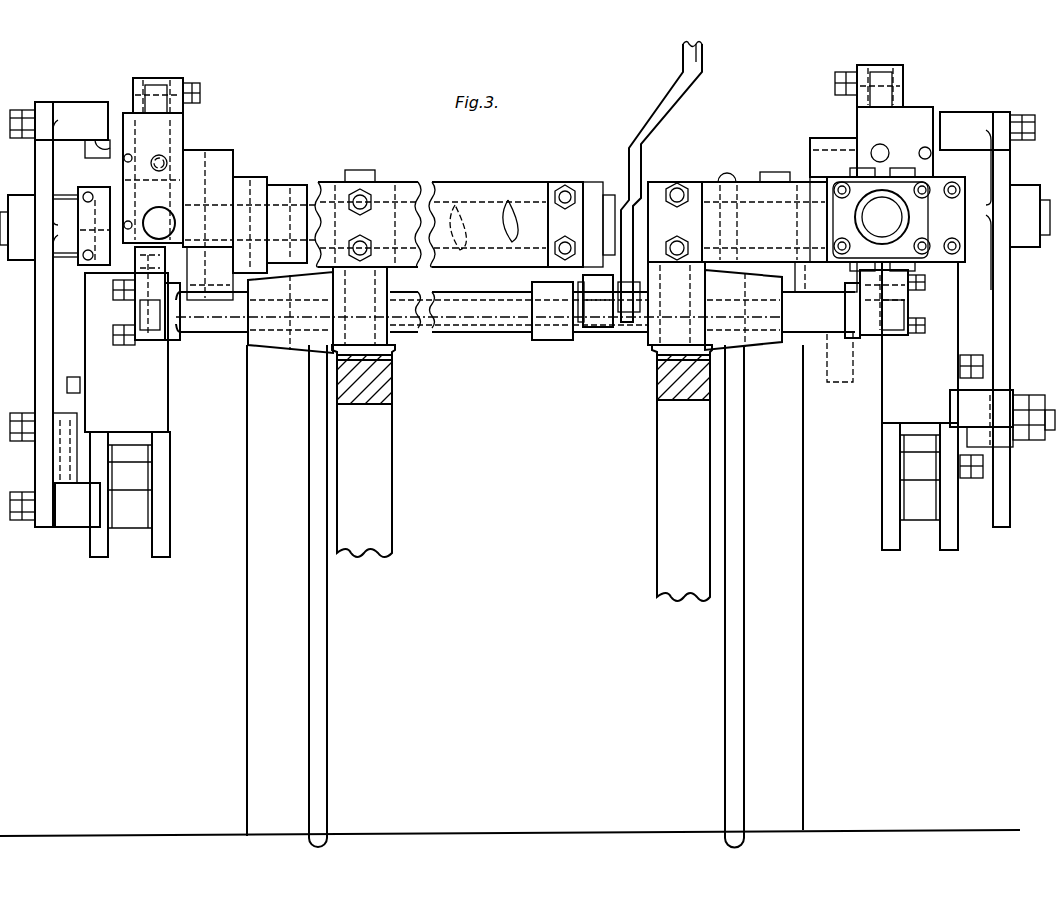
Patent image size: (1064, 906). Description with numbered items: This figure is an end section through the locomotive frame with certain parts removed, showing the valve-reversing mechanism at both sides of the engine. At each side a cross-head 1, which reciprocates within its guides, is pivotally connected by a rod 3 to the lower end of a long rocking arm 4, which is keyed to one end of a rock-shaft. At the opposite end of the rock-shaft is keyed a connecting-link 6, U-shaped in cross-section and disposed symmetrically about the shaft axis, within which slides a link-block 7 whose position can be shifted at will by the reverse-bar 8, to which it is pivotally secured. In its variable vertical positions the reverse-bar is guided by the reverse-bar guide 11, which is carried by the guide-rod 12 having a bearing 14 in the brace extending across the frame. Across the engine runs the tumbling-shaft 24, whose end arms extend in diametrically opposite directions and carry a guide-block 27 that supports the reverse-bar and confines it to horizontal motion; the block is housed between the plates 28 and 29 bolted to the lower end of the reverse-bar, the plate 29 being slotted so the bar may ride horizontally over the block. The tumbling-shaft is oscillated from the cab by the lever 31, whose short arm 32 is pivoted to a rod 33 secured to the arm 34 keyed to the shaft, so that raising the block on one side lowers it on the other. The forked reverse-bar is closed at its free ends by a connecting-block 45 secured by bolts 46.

The cross-head 1 is at (150, 553).
The rod 3 is at (62, 467).
The rocking arm 4 is at (40, 372).
The connecting-link 6 is at (206, 153).
The link-block 7 is at (203, 195).
The reverse-bar 8 is at (172, 86).
The reverse-bar guide 11 is at (183, 134).
The guide-rod 12 is at (526, 199).
The bearing 14 is at (856, 212).
The tumbling-shaft 24 is at (473, 330).
The guide-block 27 is at (152, 327).
The plate 28 is at (135, 306).
The plate 29 is at (168, 314).
The lever 31 is at (661, 118).
The short arm 32 is at (618, 282).
The rod 33 is at (600, 327).
The arm 34 is at (545, 272).
The connecting-block 45 is at (158, 90).
The bolts 46 is at (198, 95).